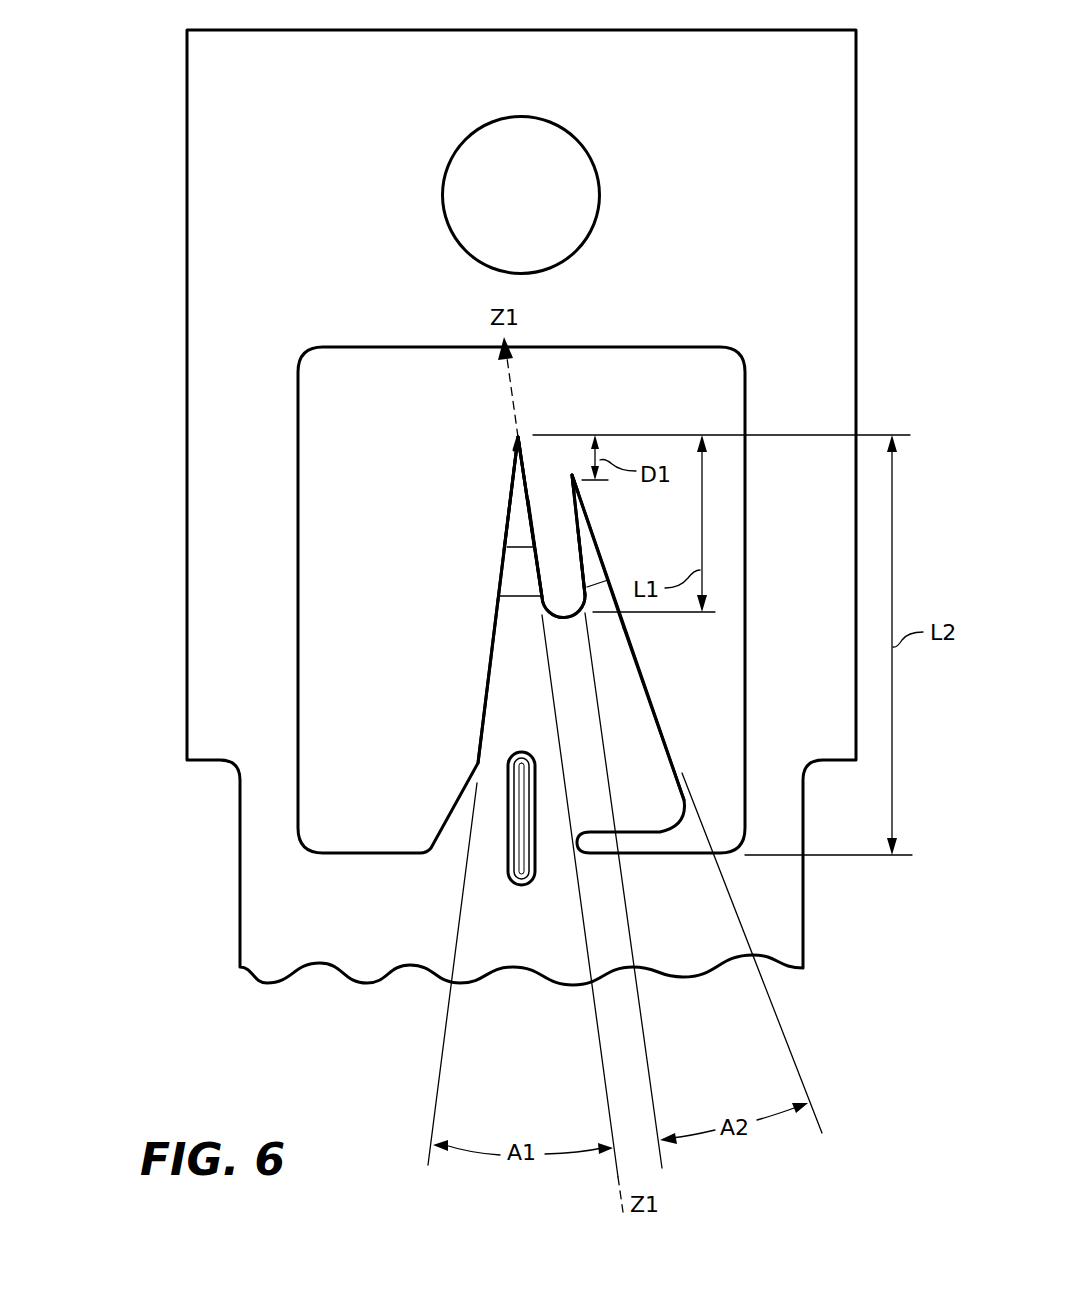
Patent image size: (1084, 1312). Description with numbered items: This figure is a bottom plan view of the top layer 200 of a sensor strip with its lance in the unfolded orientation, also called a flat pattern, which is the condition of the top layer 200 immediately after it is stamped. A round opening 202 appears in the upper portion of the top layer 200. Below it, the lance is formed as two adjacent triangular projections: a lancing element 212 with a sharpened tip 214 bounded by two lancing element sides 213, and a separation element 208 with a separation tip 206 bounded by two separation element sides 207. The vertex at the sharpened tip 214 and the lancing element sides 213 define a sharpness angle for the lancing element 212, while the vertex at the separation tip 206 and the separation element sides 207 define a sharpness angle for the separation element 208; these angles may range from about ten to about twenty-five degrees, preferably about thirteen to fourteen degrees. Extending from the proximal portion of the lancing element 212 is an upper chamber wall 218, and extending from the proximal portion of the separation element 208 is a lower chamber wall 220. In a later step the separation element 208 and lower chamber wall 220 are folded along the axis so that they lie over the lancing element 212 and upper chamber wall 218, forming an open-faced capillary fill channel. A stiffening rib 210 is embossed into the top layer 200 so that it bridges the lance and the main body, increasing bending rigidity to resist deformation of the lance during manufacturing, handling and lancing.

The top layer 200 is at (135, 46).
The mounting hole 202 is at (588, 198).
The separation tip 206 is at (571, 474).
The separation element sides 207 is at (577, 527).
The separation element 208 is at (590, 557).
The stiffening rib 210 is at (507, 837).
The lancing element 212 is at (522, 527).
The lancing element sides 213 is at (528, 474).
The sharpened tip 214 is at (518, 438).
The upper chamber wall 218 is at (518, 700).
The lower chamber wall 220 is at (633, 700).